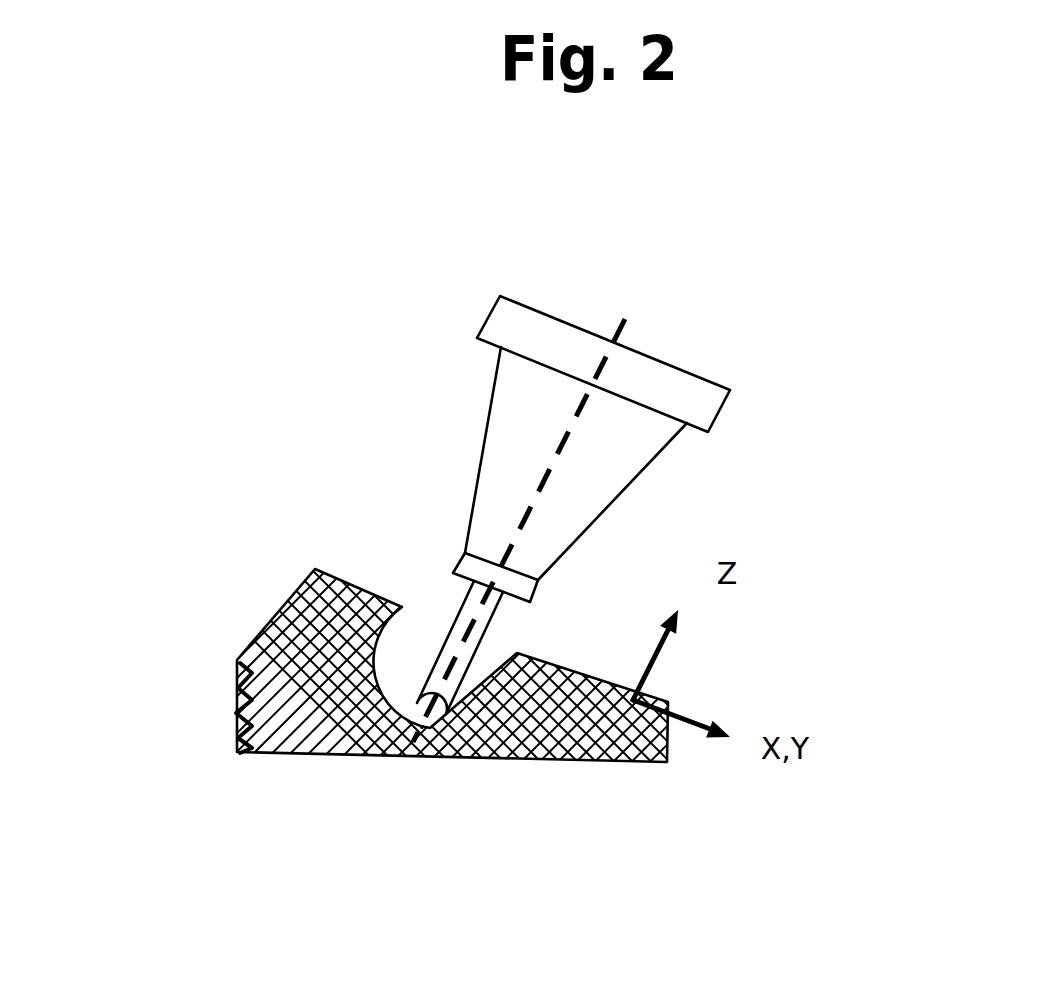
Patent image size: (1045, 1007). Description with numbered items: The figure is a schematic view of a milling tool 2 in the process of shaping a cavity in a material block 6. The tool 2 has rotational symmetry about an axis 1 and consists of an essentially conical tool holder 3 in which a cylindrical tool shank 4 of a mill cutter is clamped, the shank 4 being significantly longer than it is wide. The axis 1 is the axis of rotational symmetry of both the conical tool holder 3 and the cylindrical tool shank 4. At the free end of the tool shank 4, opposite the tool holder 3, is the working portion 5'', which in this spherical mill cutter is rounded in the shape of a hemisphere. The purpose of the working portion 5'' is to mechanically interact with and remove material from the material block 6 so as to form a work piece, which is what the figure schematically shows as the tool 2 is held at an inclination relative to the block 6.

The axis 1 is at (620, 339).
The tool 2 is at (510, 498).
The tool holder 3 is at (507, 437).
The tool shank 4 is at (449, 633).
The working portion 5'' is at (408, 833).
The material block 6 is at (270, 712).